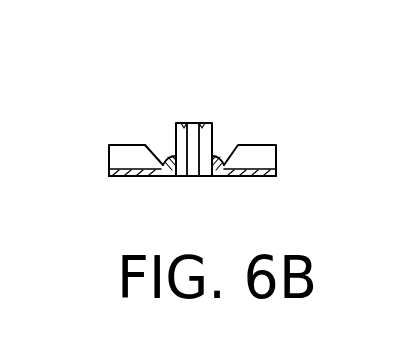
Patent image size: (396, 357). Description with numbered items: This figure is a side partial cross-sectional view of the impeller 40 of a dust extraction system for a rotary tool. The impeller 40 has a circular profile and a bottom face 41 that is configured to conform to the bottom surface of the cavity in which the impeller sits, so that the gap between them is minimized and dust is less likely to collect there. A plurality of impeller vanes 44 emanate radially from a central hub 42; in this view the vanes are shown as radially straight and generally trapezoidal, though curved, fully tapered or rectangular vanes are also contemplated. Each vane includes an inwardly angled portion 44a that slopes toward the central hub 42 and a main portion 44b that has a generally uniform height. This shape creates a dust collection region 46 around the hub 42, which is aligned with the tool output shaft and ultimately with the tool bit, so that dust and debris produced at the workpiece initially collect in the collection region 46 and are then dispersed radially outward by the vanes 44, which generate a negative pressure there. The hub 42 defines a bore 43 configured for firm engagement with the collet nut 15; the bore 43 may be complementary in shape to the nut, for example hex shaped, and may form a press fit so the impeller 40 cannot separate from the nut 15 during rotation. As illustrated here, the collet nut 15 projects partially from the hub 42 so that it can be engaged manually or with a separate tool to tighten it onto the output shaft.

The impeller 40 is at (283, 162).
The bottom face 41 is at (255, 177).
The central hub 42 is at (222, 160).
The bore 43 is at (178, 153).
The impeller vanes 44 is at (262, 155).
The inwardly angled portion 44a is at (158, 150).
The main portion 44b is at (128, 145).
The dust collection region 46 is at (163, 155).
The collet nut 15 is at (200, 123).